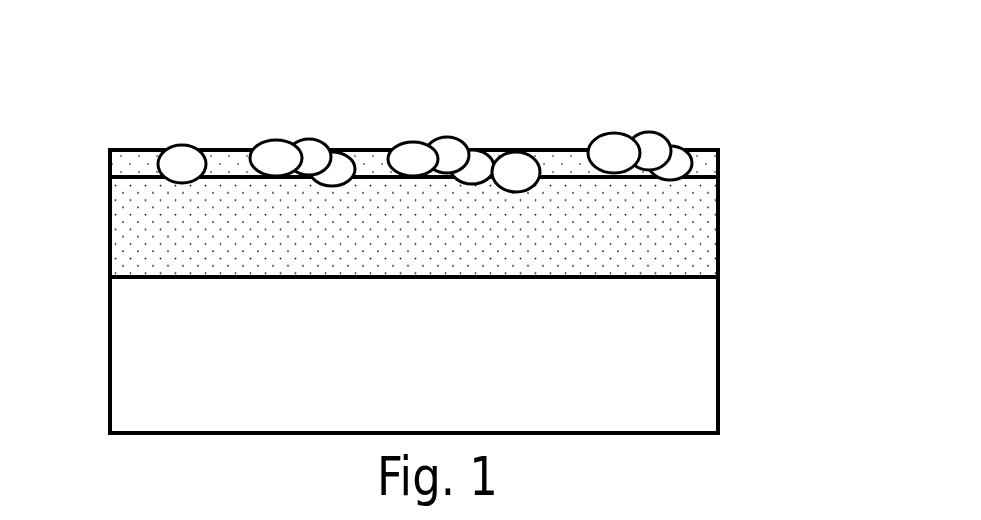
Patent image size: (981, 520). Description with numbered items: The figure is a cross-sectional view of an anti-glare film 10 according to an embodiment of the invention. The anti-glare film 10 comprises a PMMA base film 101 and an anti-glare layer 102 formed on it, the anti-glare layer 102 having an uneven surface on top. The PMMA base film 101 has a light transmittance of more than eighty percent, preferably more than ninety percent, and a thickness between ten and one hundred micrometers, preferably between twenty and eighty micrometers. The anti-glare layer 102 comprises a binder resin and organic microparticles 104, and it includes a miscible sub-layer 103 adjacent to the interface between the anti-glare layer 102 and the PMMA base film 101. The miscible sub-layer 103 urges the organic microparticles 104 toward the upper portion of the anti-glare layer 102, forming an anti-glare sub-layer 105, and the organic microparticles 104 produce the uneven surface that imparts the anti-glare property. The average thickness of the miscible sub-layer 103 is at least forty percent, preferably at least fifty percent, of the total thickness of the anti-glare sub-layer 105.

The anti-glare film 10 is at (53, 65).
The PMMA base film 101 is at (438, 372).
The anti-glare layer 102 is at (521, 198).
The miscible sub-layer 103 is at (703, 232).
The organic microparticles 104 is at (518, 170).
The anti-glare sub-layer 105 is at (703, 165).